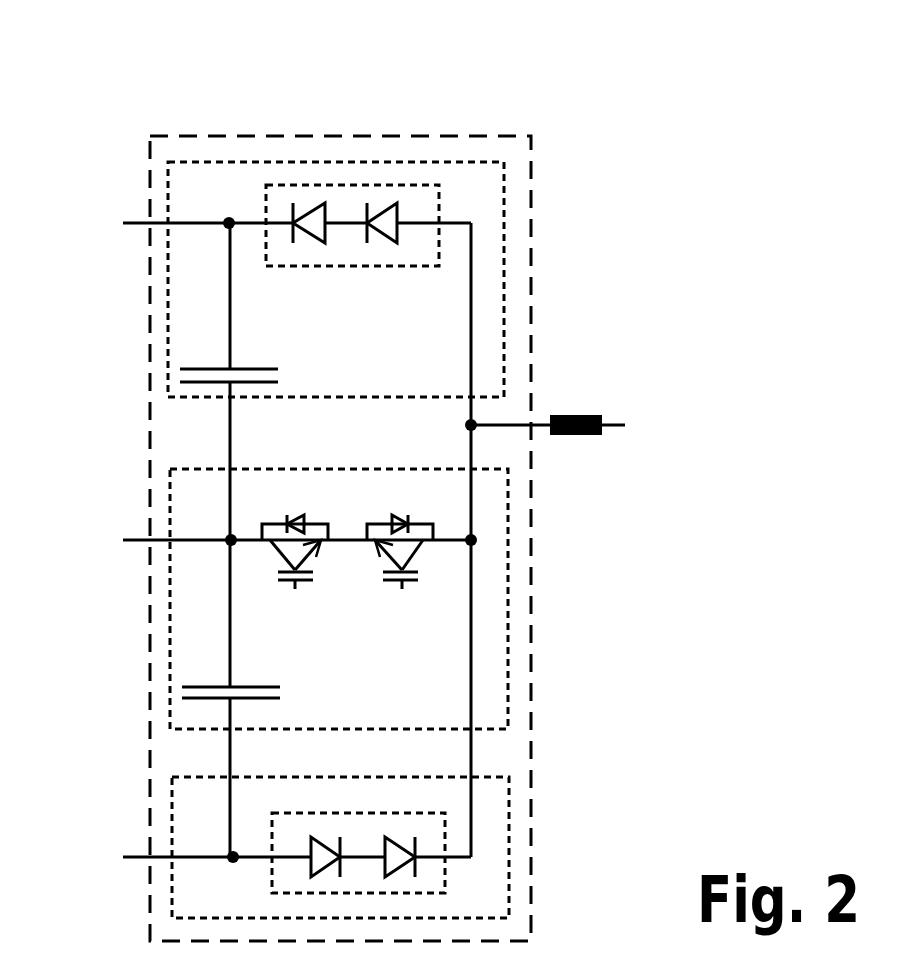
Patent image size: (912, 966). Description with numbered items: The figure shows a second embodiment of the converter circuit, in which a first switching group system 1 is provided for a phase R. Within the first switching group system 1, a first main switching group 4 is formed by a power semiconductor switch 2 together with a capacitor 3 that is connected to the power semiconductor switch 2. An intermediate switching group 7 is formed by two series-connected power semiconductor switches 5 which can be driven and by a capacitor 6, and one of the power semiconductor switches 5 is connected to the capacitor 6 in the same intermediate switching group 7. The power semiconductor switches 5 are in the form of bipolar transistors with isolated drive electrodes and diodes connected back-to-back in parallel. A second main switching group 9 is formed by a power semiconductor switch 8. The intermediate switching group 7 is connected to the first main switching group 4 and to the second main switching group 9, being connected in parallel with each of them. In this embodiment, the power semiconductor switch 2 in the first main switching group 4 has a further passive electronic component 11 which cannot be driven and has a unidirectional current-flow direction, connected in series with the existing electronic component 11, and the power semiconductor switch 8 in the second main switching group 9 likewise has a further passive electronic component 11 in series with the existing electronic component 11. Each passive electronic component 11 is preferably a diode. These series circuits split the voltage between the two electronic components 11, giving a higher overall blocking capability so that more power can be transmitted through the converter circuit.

The first switching group system 1 is at (150, 183).
The power semiconductor switch 2 is at (383, 185).
The capacitor 3 is at (187, 369).
The first main switching group 4 is at (288, 160).
The power semiconductor switch which can be driven 5 is at (328, 524).
The capacitor 6 is at (187, 687).
The intermediate switching group 7 is at (168, 493).
The power semiconductor switch 8 is at (277, 813).
The second main switching group 9 is at (170, 823).
The passive electronic component 11 is at (382, 210).
The phase R is at (569, 428).